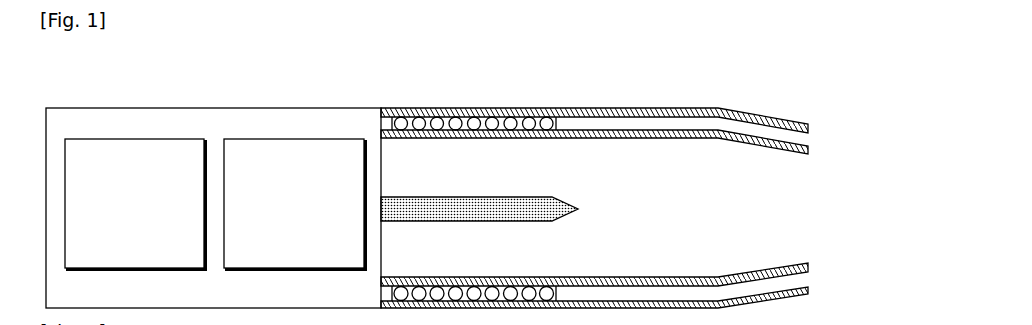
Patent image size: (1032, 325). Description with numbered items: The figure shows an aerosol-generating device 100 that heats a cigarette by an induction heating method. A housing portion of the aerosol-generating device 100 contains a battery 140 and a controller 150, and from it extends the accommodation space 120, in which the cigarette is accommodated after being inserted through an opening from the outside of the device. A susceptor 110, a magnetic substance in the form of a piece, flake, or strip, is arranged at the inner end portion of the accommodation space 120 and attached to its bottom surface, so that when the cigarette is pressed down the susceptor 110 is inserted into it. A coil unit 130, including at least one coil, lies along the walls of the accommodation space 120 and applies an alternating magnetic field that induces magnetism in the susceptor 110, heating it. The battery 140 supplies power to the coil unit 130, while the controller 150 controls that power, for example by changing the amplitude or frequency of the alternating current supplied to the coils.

The aerosol-generating device 100 is at (617, 100).
The susceptor 110 is at (579, 199).
The accommodation space 120 is at (680, 217).
The coil unit 130 is at (550, 117).
The battery 140 is at (147, 137).
The controller 150 is at (305, 137).